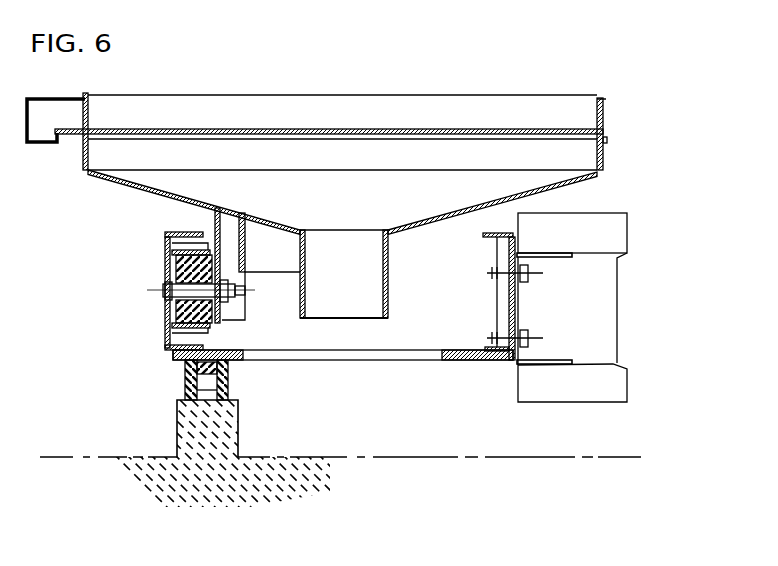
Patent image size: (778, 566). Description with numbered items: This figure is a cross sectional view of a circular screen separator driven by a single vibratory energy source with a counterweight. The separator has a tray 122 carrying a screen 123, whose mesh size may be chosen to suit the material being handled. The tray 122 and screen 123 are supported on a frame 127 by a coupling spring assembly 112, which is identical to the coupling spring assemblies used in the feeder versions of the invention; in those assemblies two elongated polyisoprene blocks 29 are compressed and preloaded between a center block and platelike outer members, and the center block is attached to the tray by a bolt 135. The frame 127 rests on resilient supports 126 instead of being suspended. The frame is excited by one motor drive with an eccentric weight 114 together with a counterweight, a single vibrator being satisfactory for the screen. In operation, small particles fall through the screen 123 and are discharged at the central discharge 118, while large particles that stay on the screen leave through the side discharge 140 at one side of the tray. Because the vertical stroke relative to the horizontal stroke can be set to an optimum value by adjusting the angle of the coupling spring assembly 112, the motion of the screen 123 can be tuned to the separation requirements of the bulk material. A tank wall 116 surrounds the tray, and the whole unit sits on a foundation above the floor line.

The polyisoprene block 29 is at (252, 462).
The spring assembly 112 is at (168, 252).
The eccentric weight 114 is at (617, 239).
The tank 116 is at (603, 110).
The discharge 118 is at (372, 288).
The tray 122 is at (592, 175).
The screen 123 is at (213, 130).
The support 126 is at (228, 382).
The frame 127 is at (514, 306).
The shaft 135 is at (163, 287).
The side discharge 140 is at (48, 144).